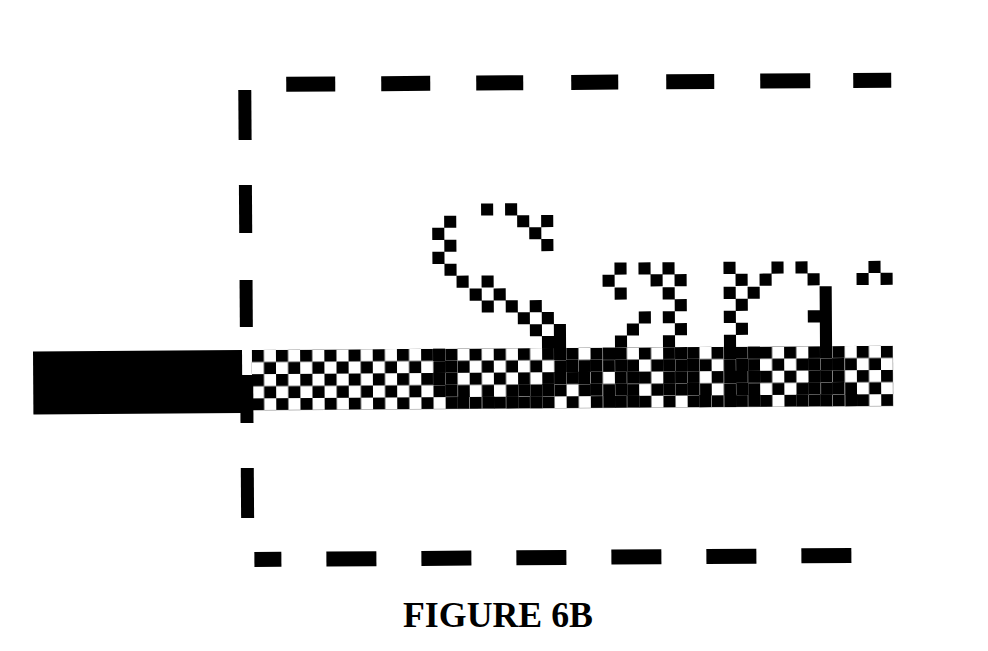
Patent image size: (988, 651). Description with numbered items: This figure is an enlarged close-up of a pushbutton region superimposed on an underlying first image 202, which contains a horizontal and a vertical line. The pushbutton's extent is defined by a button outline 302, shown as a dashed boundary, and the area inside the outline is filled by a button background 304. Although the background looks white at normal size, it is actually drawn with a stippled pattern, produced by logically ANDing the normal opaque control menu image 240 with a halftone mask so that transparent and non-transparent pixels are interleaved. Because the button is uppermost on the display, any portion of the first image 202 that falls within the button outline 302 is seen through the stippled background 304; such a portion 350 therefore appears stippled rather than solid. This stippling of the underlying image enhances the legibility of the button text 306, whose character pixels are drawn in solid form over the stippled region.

The first image 202 is at (101, 350).
The control menu image 240 is at (712, 223).
The button outline 302 is at (238, 118).
The button background 304 is at (360, 128).
The button text 306 is at (572, 212).
The stippled portion of first image 350 is at (312, 400).